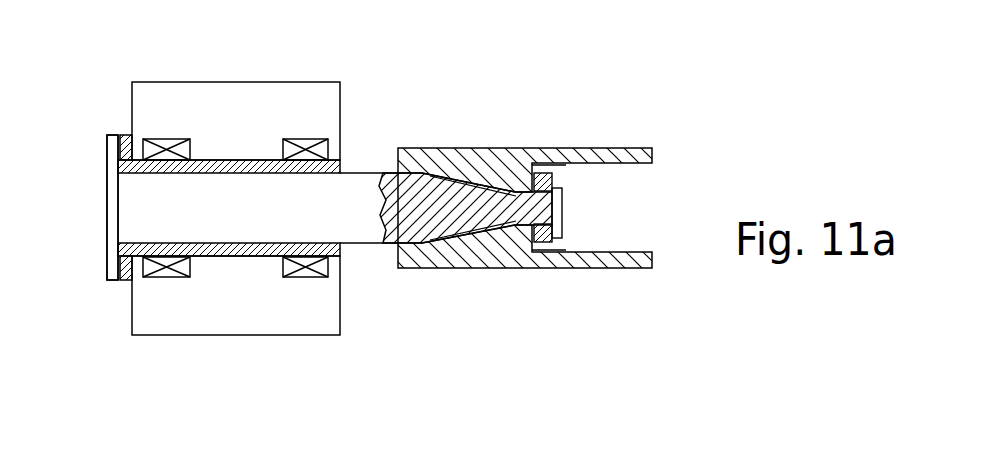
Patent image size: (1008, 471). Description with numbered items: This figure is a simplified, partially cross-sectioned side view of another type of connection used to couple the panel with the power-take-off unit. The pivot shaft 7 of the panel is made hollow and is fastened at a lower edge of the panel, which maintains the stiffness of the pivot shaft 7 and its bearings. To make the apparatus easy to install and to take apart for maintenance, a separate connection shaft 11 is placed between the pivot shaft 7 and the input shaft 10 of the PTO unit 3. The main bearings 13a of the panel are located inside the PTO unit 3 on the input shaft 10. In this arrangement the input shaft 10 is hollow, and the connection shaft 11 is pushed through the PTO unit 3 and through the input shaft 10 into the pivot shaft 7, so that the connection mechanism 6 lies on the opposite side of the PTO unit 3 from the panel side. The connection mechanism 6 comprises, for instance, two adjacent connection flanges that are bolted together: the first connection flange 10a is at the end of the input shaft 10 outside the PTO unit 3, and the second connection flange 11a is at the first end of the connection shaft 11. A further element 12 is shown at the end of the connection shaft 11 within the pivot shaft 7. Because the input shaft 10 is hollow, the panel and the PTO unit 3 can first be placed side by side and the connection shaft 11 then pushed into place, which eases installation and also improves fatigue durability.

The connection mechanism 6 is at (118, 106).
The PTO unit 3 is at (295, 88).
The input shaft 10 is at (267, 160).
The first connection flange 10a is at (128, 282).
The connection shaft 11 is at (363, 178).
The second connection flange 11a is at (110, 238).
The fastening element 12 is at (564, 181).
The main bearings 13a is at (307, 274).
The pivot shaft 7 is at (604, 148).